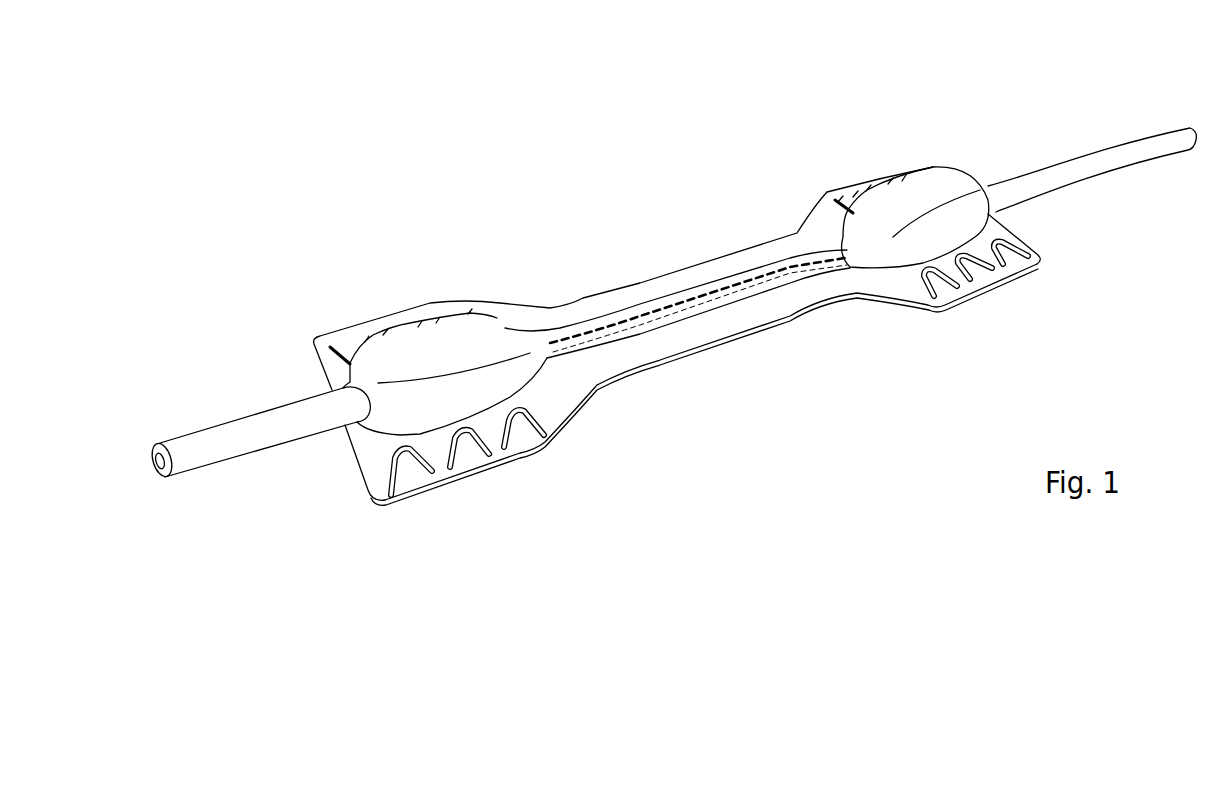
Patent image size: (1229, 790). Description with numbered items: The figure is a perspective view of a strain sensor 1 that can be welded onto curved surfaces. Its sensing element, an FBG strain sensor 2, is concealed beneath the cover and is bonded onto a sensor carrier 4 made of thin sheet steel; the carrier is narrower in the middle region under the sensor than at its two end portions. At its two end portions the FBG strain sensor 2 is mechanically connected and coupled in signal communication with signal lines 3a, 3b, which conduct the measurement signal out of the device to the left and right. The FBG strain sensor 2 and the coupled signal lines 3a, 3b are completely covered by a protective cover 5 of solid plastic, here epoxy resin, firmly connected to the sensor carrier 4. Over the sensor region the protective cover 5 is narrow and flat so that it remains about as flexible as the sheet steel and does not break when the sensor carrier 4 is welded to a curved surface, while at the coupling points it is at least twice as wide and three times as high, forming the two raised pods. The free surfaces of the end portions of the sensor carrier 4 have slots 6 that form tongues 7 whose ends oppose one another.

The strain sensor 1 is at (620, 255).
The FBG strain sensor 2 is at (700, 285).
The signal line 3a is at (195, 437).
The signal line 3b is at (1058, 168).
The sensor carrier 4 is at (575, 383).
The protective cover 5 is at (507, 333).
The slots 6 is at (388, 468).
The tongues 7 is at (420, 472).